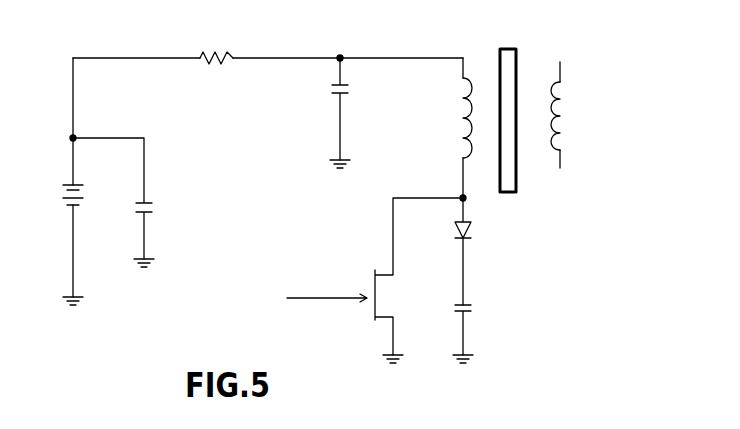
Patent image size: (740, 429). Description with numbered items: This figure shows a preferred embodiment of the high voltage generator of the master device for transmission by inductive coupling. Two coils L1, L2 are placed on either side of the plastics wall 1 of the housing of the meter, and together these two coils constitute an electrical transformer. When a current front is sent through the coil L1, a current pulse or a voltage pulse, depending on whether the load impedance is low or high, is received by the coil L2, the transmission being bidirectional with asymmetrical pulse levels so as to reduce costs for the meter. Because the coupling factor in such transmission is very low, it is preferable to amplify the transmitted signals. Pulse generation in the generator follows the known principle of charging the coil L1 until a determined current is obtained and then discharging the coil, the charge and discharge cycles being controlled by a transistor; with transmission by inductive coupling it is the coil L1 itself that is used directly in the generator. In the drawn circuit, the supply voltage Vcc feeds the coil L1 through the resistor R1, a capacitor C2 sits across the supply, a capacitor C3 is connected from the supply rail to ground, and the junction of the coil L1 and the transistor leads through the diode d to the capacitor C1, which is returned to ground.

The plastics wall 1 is at (516, 180).
The supply voltage Vcc is at (54, 198).
The resistor R1 is at (216, 45).
The capacitor C1 is at (475, 333).
The capacitor C2 is at (113, 202).
The capacitor C3 is at (325, 111).
The coil L1 is at (480, 128).
The coil L2 is at (543, 115).
The diode d is at (453, 251).